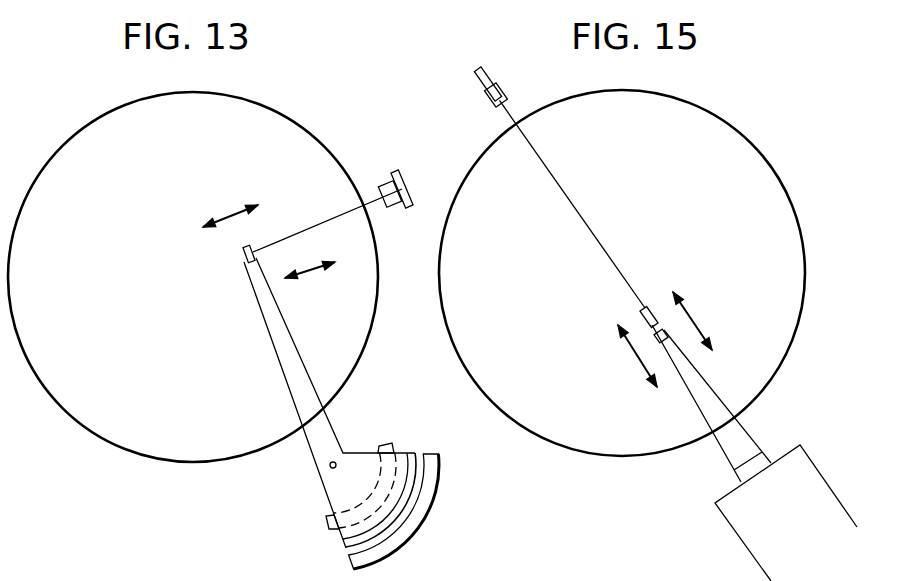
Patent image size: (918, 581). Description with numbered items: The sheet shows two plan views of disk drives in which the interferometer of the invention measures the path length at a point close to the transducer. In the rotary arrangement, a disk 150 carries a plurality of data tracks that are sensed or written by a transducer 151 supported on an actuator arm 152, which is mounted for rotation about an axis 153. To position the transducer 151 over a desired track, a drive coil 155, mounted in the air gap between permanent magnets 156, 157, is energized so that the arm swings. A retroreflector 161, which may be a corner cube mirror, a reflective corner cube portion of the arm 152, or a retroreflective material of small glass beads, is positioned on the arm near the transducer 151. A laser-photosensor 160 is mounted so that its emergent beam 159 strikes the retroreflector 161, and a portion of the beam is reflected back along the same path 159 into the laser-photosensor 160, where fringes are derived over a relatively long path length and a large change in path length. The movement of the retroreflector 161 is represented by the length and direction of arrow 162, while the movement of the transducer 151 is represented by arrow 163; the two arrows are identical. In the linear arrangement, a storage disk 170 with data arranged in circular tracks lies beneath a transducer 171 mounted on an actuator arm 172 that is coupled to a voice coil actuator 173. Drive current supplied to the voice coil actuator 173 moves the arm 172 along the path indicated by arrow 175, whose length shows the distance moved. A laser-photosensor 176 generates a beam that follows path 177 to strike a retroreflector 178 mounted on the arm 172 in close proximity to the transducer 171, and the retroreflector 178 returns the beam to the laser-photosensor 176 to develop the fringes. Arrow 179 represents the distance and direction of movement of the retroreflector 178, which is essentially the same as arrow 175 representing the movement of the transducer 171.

In FIG. 13, the disk 150 is at (272, 110).
In FIG. 13, the transducer 151 is at (244, 254).
In FIG. 13, the actuator arm 152 is at (278, 360).
In FIG. 13, the axis 153 is at (329, 466).
In FIG. 13, the drive coil 155 is at (408, 452).
In FIG. 13, the permanent magnet 156 is at (439, 474).
In FIG. 13, the permanent magnet 157 is at (383, 448).
In FIG. 13, the emergent beam 159 is at (307, 229).
In FIG. 13, the laser-photosensor 160 is at (408, 184).
In FIG. 13, the retroreflector 161 is at (253, 247).
In FIG. 13, the arrow 162 is at (233, 211).
In FIG. 13, the arrow 163 is at (316, 273).
In FIG. 15, the storage disk 170 is at (705, 108).
In FIG. 15, the transducer 171 is at (651, 305).
In FIG. 15, the actuator arm 172 is at (705, 376).
In FIG. 15, the voice coil actuator 173 is at (787, 446).
In FIG. 15, the arrow 175 is at (697, 322).
In FIG. 15, the laser-photosensor 176 is at (481, 76).
In FIG. 15, the path 177 is at (571, 198).
In FIG. 15, the retroreflector 178 is at (655, 335).
In FIG. 15, the arrow 179 is at (640, 365).